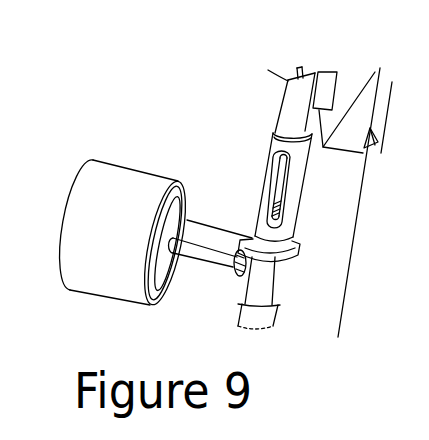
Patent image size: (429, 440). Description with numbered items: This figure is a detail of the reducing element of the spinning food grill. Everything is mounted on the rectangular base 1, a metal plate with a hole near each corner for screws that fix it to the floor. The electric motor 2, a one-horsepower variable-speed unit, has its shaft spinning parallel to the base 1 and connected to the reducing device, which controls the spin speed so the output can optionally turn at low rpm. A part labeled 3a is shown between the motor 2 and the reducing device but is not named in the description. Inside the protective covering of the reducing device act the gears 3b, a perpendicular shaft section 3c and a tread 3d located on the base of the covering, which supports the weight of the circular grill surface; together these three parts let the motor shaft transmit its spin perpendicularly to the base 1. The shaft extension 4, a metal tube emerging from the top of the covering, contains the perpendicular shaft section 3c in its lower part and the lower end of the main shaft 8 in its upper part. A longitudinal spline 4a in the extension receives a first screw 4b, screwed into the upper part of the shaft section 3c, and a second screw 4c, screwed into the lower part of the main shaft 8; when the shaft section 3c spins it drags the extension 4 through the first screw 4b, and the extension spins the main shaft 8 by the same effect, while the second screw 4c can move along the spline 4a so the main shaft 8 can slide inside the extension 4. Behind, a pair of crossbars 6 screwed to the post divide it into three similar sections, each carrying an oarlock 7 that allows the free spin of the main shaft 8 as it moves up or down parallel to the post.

The rectangular base 1 is at (346, 257).
The electric motor 2 is at (120, 184).
The shaft 3a is at (212, 243).
The gears 3b is at (241, 275).
The perpendicular shaft section 3c is at (274, 292).
The tread 3d is at (236, 307).
The shaft extension 4 is at (303, 175).
The longitudinal spline 4a is at (289, 197).
The first screw 4b is at (271, 212).
The second screw 4c is at (274, 175).
The crossbars 6 is at (375, 144).
The oarlock 7 is at (307, 66).
The main shaft 8 is at (284, 102).